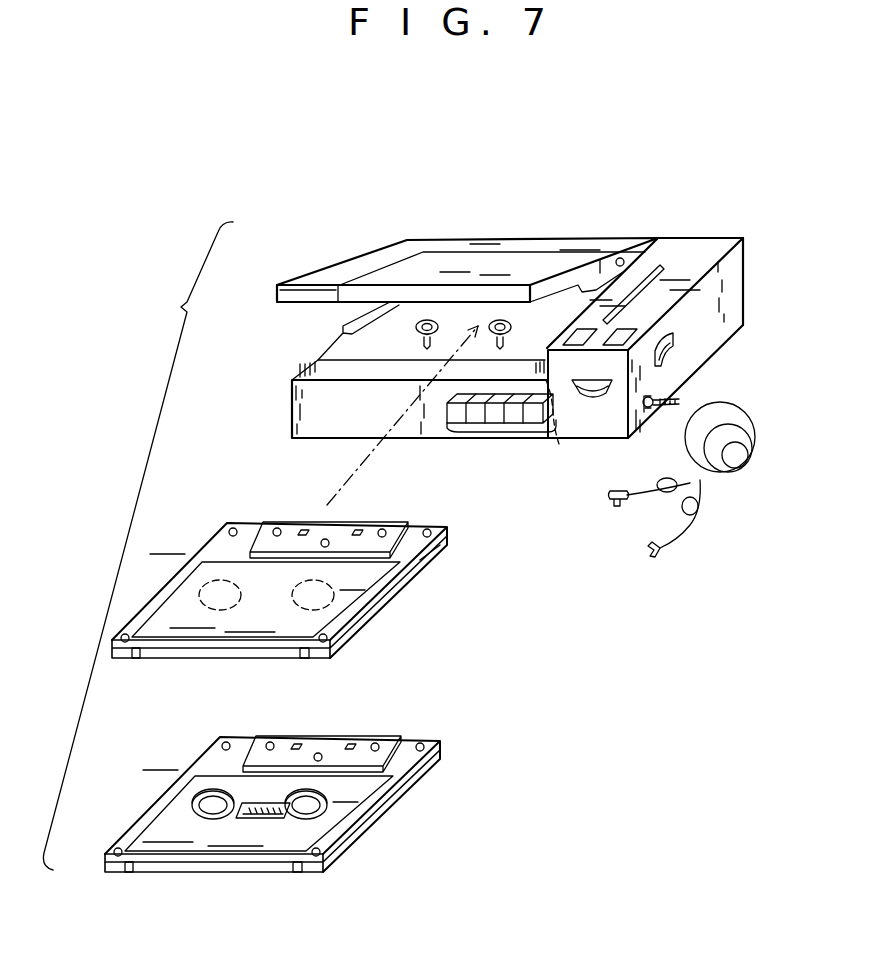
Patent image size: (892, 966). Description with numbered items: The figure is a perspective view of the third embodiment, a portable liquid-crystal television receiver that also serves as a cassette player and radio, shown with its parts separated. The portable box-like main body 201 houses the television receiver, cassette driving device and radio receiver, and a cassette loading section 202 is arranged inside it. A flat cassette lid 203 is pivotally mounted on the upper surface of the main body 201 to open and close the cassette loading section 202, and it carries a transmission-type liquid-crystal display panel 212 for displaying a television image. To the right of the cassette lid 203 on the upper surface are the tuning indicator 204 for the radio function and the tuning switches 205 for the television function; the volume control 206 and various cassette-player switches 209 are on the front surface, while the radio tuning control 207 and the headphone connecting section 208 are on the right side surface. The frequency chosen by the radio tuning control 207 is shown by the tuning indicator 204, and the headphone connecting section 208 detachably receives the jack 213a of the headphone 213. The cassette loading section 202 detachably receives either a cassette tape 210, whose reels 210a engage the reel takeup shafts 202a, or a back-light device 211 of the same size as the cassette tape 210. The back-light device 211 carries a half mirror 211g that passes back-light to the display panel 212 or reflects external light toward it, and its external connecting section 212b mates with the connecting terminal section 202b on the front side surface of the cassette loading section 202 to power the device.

The main body 201 is at (683, 236).
The cassette loading section 202 is at (377, 342).
The reel takeup shafts 202a is at (415, 327).
The connecting terminal section 202b is at (563, 424).
The cassette lid 203 is at (392, 240).
The tuning indicator 204 is at (683, 272).
The tuning switches 205 is at (607, 321).
The volume control 206 is at (593, 401).
The radio tuning control 207 is at (673, 350).
The headphone connecting section 208 is at (660, 410).
The switches 209 is at (500, 432).
The cassette tape 210 is at (292, 817).
The reels 210a is at (204, 797).
The back-light device 211 is at (296, 597).
The half mirror 211g is at (200, 573).
The liquid-crystal display panel 212 is at (483, 262).
The external connecting section 212b is at (298, 660).
The headphone 213 is at (738, 470).
The jack 213a is at (655, 400).